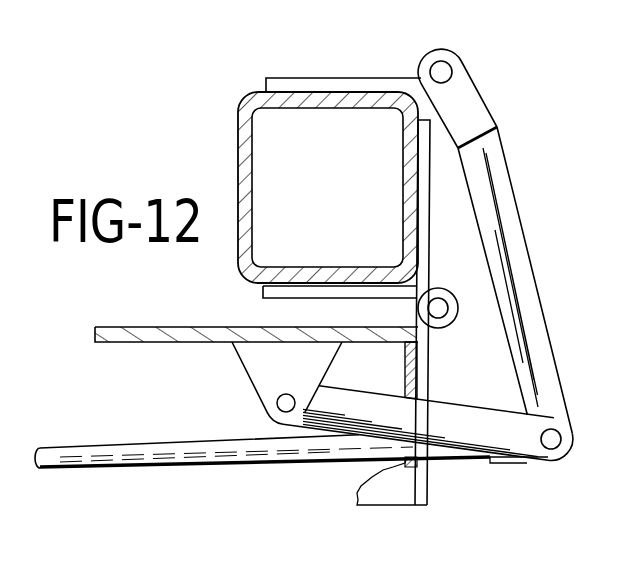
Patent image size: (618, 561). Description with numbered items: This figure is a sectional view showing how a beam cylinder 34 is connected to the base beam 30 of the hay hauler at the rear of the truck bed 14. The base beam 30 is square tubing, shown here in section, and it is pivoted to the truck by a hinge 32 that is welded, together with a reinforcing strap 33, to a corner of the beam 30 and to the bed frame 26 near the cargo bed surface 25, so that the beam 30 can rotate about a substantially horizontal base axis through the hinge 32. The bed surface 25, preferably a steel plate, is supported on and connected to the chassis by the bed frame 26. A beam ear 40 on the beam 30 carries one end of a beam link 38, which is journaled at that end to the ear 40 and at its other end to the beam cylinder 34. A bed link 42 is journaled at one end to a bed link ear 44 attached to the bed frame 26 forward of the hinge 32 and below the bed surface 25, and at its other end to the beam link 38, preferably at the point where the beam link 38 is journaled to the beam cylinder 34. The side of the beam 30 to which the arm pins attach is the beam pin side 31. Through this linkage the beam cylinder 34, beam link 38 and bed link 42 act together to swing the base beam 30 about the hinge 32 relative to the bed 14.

The bed 14 is at (178, 327).
The bed surface 25 is at (243, 327).
The bed frame 26 is at (405, 372).
The base beam 30 is at (238, 120).
The beam pin side 31 is at (303, 96).
The hinge 32 is at (447, 327).
The reinforcing strap 33 is at (459, 238).
The beam cylinder 34 is at (168, 447).
The beam link 38 is at (550, 181).
The beam ear 40 is at (385, 82).
The bed link 42 is at (542, 455).
The bed link ear 44 is at (246, 369).